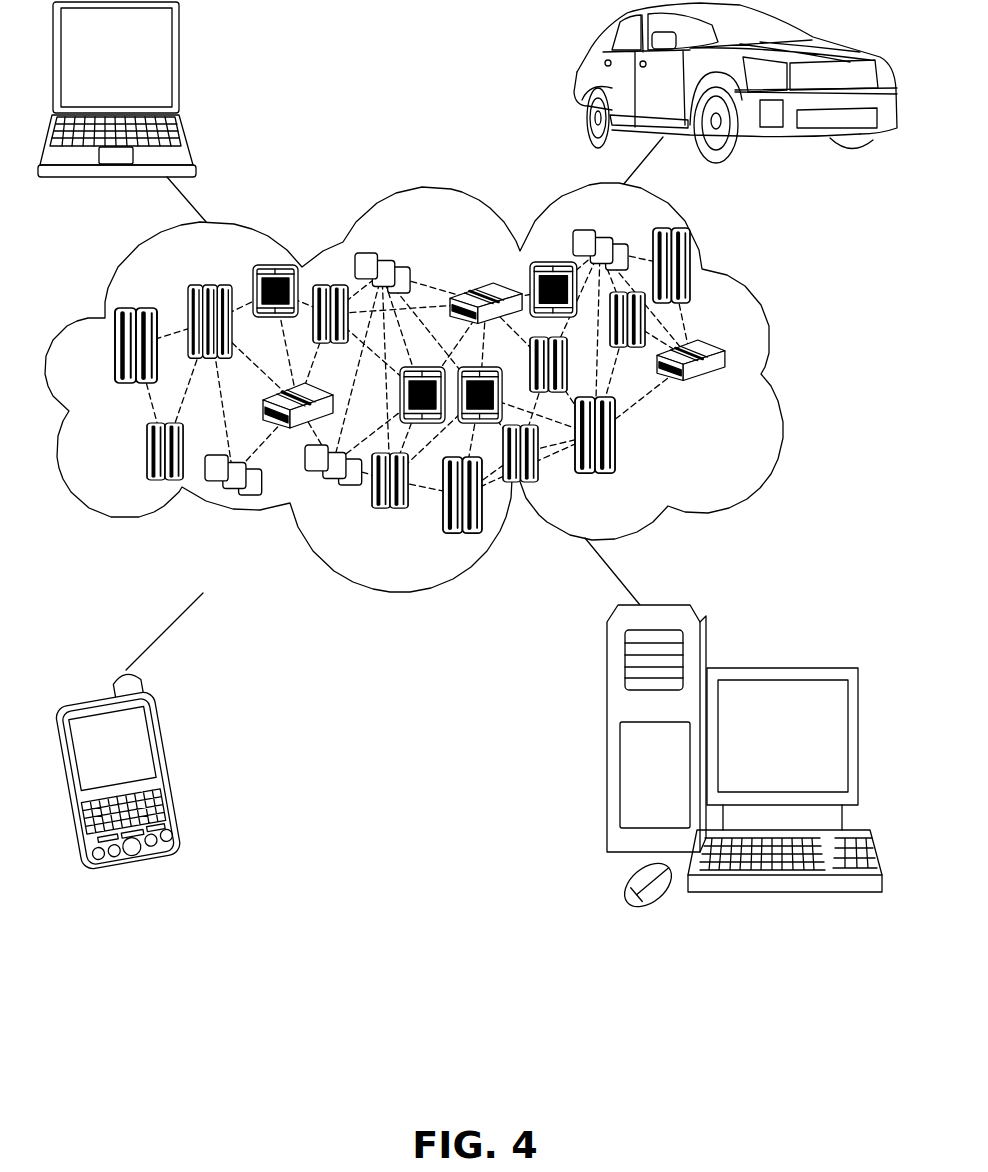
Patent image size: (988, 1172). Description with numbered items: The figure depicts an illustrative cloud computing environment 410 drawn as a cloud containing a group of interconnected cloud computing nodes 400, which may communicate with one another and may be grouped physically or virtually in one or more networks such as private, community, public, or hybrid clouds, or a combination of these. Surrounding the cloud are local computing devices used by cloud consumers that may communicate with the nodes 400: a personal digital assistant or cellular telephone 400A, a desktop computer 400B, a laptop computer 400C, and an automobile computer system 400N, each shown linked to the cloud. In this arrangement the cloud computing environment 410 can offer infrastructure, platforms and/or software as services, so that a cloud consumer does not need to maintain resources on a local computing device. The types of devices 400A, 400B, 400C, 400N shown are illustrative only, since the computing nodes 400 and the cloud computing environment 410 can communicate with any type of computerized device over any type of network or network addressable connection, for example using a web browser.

The cloud computing nodes 400 is at (449, 387).
The cloud computing environment 410 is at (767, 367).
The personal digital assistant (PDA) or cellular telephone 400A is at (173, 772).
The desktop computer 400B is at (780, 667).
The laptop computer 400C is at (183, 63).
The automobile computer system 400N is at (582, 82).